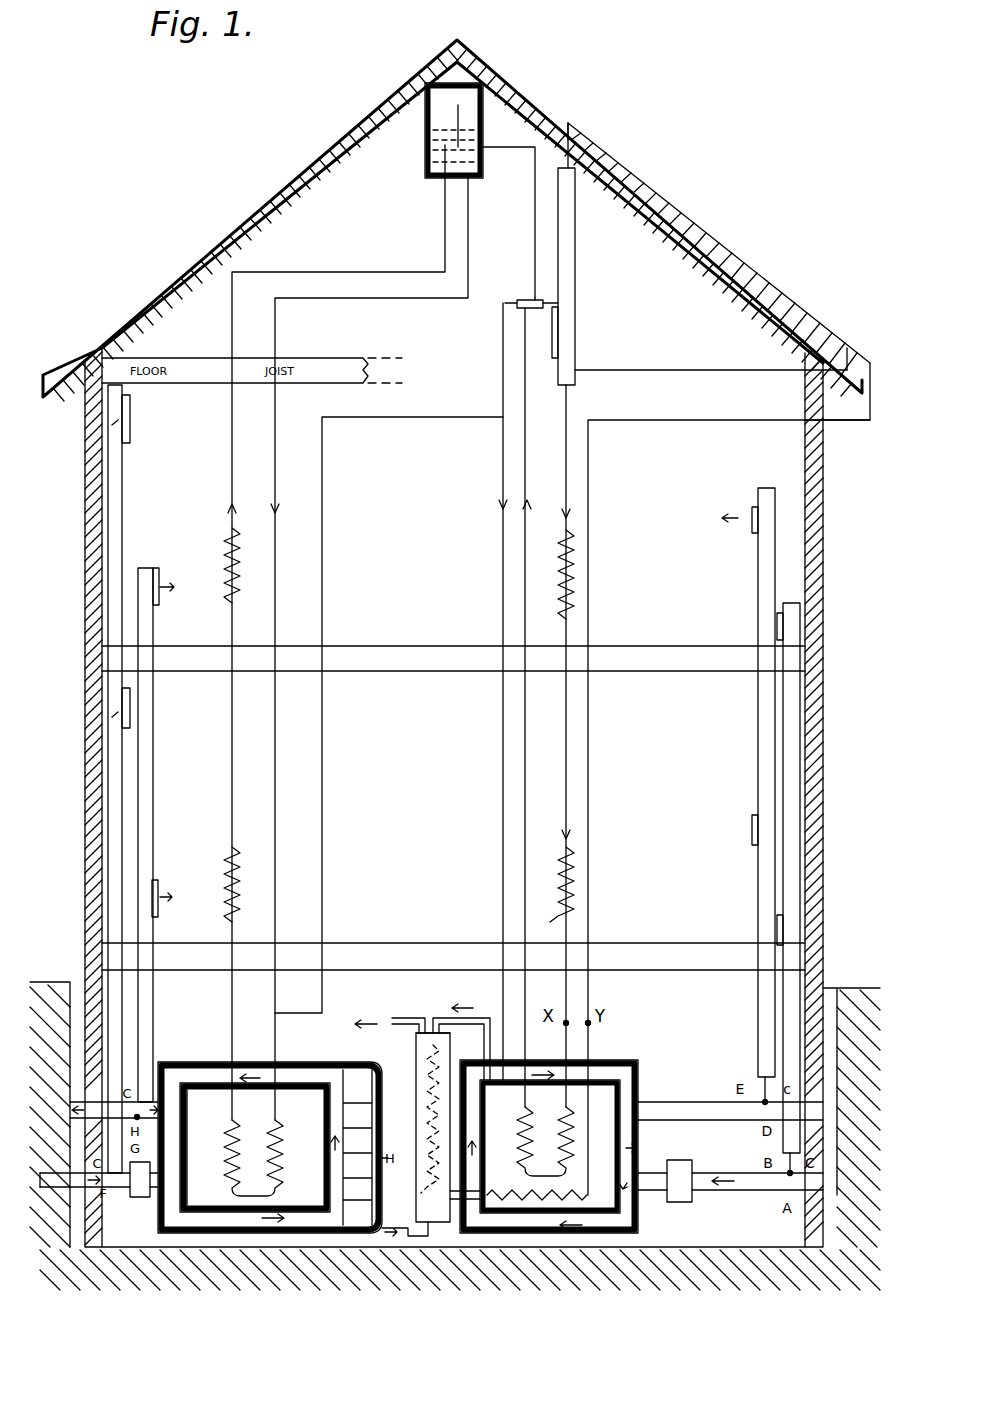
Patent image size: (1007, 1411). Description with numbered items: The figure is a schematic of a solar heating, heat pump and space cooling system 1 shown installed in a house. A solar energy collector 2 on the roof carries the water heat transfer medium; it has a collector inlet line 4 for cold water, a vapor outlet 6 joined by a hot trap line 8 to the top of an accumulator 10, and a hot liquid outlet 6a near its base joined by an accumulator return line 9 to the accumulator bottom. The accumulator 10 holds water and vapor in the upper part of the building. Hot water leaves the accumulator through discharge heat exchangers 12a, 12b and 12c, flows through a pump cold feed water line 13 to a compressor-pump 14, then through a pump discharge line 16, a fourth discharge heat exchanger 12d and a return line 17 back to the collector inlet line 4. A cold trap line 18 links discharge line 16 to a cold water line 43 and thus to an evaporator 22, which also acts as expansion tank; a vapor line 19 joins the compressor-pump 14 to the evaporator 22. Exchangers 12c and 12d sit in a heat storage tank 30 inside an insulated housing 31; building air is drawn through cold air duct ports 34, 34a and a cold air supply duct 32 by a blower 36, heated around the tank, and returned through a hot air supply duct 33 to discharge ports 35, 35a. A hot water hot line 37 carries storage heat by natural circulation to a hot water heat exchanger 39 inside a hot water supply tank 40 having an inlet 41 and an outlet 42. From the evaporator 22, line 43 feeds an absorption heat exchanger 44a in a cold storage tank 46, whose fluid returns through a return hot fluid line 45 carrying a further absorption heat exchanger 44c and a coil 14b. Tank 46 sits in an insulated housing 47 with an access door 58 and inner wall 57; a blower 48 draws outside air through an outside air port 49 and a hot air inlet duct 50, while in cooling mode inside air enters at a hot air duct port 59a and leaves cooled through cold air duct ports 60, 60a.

The heating system 1 is at (148, 1098).
The solar energy collector 2 is at (700, 224).
The collector inlet line 4 is at (872, 362).
The collector vapor outlet 6 is at (628, 166).
The collector hot liquid outlet 6a is at (845, 345).
The hot trap line 8 is at (575, 125).
The accumulator return line 9 is at (680, 370).
The accumulator 10 is at (575, 268).
The discharge heat exchanger 12a is at (575, 543).
The discharge heat exchanger 12b is at (578, 850).
The discharge heat exchanger 12c is at (535, 1105).
The discharge heat exchanger 12d is at (595, 1185).
The pump cold feed water line 13 is at (525, 862).
The compressor-pump 14 is at (518, 300).
The heating coil 14b is at (228, 850).
The pump discharge line 16 is at (500, 468).
The return line 17 is at (590, 889).
The cold trap line 18 is at (358, 418).
The vapor line 19 is at (535, 222).
The evaporator 22 is at (425, 148).
The heat storage tank 30 is at (612, 1082).
The thermally insulated housing 31 is at (640, 1068).
The cold air supply duct 32 is at (708, 1192).
The hot air supply duct 33 is at (453, 1200).
The cold air duct port 34 is at (777, 618).
The cold air duct port 34a is at (777, 922).
The discharge port 35 is at (752, 512).
The discharge port 35a is at (752, 820).
The blower 36 is at (672, 1203).
The hot water hot line 37 is at (482, 1016).
The hot water heat exchanger 39 is at (424, 1076).
The hot water supply tank 40 is at (416, 1044).
The inlet 41 is at (410, 1230).
The outlet 42 is at (394, 1016).
The cold water line 43 is at (275, 758).
The absorption heat exchanger 44a is at (268, 1138).
The absorption heat exchanger 44c is at (228, 540).
The return hot fluid line 45 is at (232, 748).
The cold storage tank 46 is at (322, 1086).
The thermally insulated housing 47 is at (296, 1064).
The blower 48 is at (99, 1209).
The outside air port 49 is at (70, 1190).
The hot air inlet duct 50 is at (138, 1198).
The tank wall 57 is at (186, 1128).
The access door 58 is at (373, 1116).
The hot air duct port 59a is at (130, 718).
The cold air duct port 60 is at (155, 575).
The cold air duct port 60a is at (158, 882).